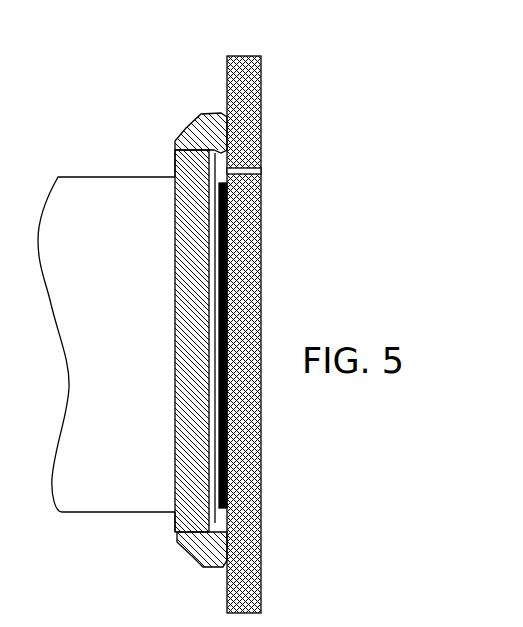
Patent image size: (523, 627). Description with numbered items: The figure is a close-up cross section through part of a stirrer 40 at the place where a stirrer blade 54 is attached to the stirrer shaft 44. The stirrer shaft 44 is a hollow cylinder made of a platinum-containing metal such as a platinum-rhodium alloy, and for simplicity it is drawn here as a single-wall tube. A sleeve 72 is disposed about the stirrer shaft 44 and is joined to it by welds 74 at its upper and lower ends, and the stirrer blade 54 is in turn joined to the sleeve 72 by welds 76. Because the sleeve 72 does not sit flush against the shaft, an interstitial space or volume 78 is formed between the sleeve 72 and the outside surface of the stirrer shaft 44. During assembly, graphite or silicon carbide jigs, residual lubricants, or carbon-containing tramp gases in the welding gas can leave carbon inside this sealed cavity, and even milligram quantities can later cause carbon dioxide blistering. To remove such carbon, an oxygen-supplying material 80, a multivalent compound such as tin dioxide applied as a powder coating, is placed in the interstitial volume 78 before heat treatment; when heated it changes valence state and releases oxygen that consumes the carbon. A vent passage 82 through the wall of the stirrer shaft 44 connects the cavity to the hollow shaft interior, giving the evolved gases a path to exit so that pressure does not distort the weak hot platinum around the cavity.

The stirrer 40 is at (283, 291).
The stirrer shaft 44 is at (262, 252).
The stirrer blade 54 is at (88, 177).
The sleeve 72 is at (175, 228).
The welds 74 is at (190, 117).
The welds 76 is at (175, 168).
The interstitial space or volume 78 is at (217, 520).
The oxygen-supplying material 80 is at (218, 307).
The vent passage 82 is at (250, 164).